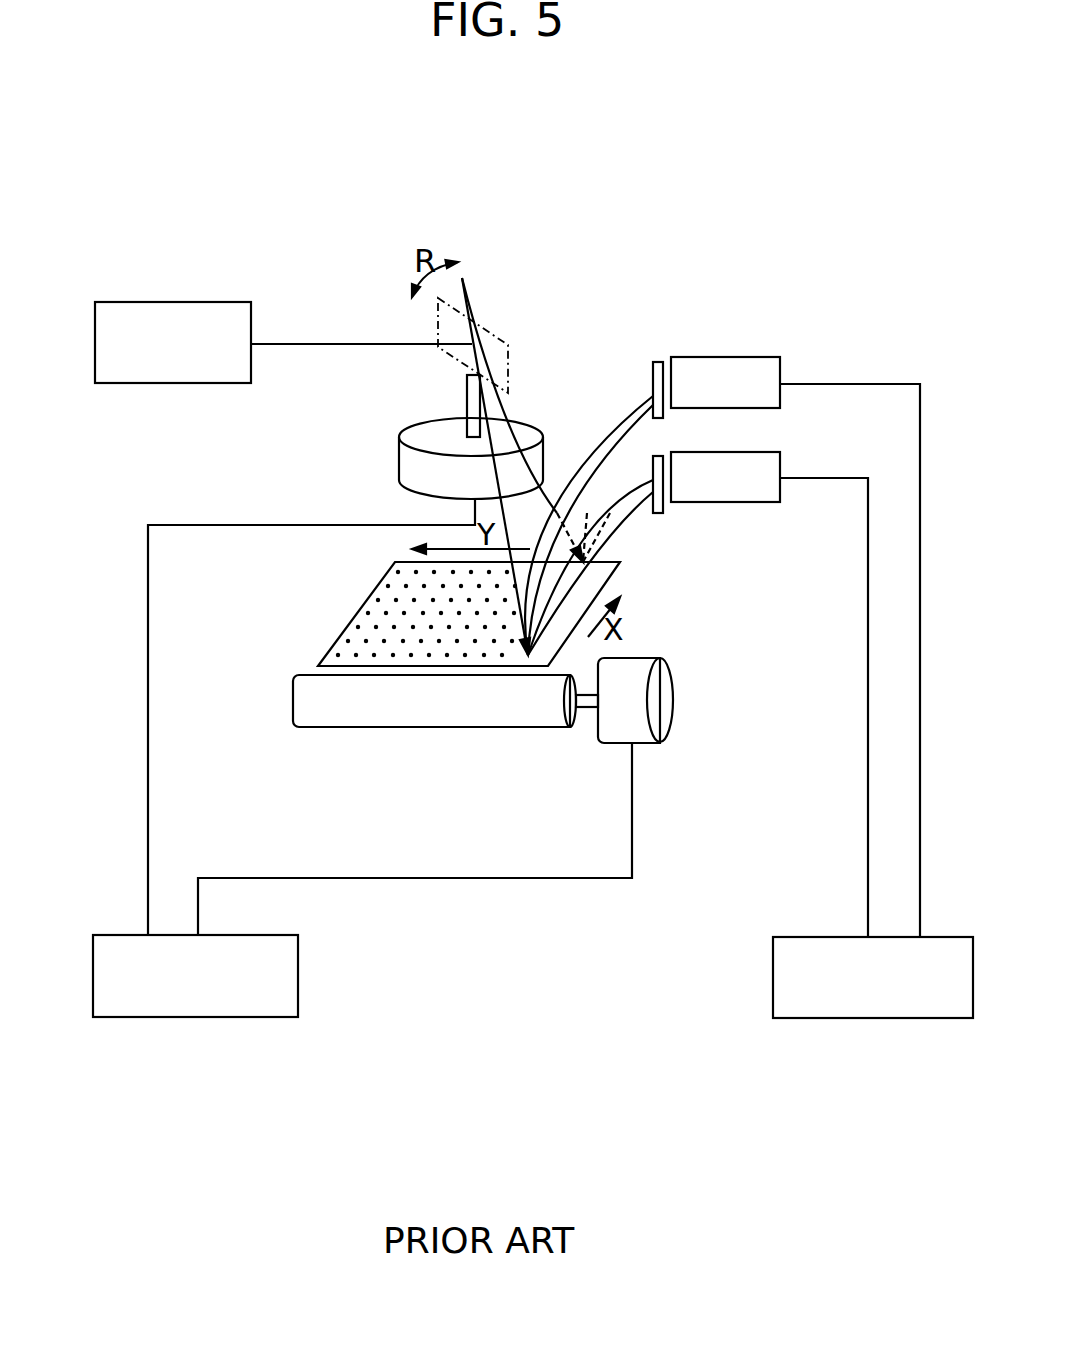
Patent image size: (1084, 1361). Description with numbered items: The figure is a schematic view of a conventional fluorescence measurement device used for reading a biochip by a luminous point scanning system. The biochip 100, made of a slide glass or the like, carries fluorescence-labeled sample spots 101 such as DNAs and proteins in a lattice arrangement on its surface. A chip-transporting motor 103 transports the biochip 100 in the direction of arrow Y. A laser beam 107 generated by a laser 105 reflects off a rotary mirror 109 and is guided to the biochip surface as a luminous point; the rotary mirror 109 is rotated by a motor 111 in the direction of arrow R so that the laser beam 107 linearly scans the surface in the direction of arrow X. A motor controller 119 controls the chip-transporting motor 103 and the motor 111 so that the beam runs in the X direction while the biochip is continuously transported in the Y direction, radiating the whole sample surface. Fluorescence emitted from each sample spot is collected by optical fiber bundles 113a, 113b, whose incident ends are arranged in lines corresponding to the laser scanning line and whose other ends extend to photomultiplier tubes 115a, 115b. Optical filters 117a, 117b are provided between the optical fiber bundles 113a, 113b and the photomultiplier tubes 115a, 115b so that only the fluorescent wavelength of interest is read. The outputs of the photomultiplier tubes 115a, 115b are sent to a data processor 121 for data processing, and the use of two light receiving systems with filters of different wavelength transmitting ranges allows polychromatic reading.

The biochip 100 is at (333, 643).
The sample spots 101 is at (415, 598).
The chip-transporting motor 103 is at (667, 722).
The laser 105 is at (180, 303).
The laser beam 107 is at (323, 343).
The rotary mirror 109 is at (468, 308).
The motor 111 is at (412, 437).
The optical fiber bundle 113a is at (602, 447).
The optical fiber bundle 113b is at (611, 512).
The photomultiplier tube 115a is at (772, 362).
The photomultiplier tube 115b is at (777, 493).
The optical filter 117a is at (658, 362).
The optical filter 117b is at (660, 503).
The motor controller 119 is at (235, 1010).
The data processor 121 is at (933, 1013).